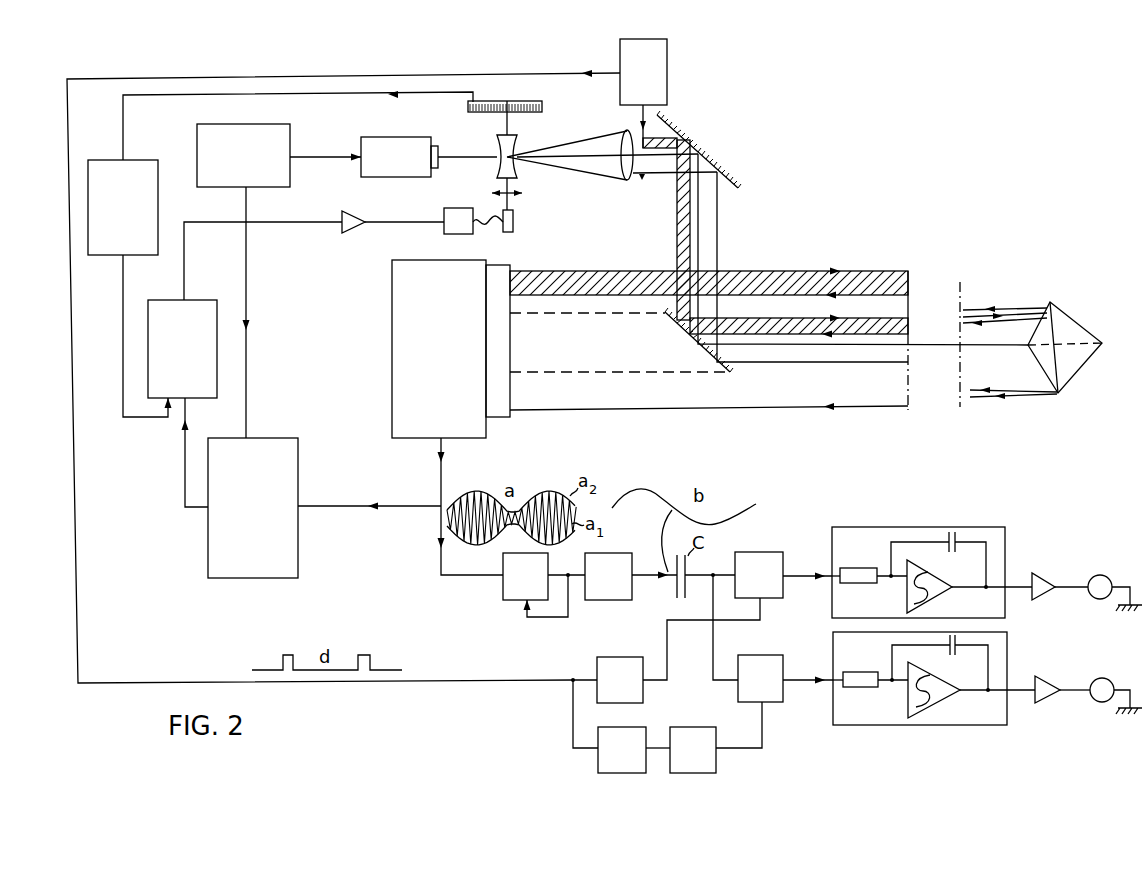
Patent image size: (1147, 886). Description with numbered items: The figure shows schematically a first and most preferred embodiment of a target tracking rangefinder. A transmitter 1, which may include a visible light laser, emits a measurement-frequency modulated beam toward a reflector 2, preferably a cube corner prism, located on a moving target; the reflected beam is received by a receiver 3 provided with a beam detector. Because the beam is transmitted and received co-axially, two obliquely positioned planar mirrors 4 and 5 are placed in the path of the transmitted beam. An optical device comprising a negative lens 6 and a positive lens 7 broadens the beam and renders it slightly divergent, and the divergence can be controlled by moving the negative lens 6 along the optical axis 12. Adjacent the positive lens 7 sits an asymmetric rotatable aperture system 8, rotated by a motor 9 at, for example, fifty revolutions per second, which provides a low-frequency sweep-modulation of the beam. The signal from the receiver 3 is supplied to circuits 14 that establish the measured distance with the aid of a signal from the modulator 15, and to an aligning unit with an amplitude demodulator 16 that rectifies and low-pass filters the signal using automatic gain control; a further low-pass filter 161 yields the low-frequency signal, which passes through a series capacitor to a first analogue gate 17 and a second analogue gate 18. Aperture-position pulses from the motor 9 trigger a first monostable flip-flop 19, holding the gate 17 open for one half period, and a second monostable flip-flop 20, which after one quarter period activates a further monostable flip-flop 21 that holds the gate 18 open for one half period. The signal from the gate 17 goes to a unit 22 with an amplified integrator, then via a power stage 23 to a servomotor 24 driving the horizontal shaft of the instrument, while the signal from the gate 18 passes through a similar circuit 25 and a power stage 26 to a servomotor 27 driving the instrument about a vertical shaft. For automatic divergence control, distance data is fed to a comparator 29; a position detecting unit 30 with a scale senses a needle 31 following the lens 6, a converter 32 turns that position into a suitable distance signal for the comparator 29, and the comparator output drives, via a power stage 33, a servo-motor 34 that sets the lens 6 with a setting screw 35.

The transmitter 1 is at (362, 138).
The reflector 2 is at (1060, 393).
The receiver 3 is at (392, 300).
The planar mirror 4 is at (712, 165).
The planar mirror 5 is at (700, 352).
The negative lens 6 is at (517, 172).
The positive lens 7 is at (621, 133).
The aperture system 8 is at (640, 125).
The motor 9 is at (667, 50).
The optical axis 12 is at (669, 173).
The distance establishing circuits 14 is at (306, 466).
The modulator 15 is at (290, 133).
The amplitude demodulator 16 is at (503, 594).
The low-pass filter 161 is at (604, 600).
The first analogue gate 17 is at (767, 539).
The second analogue gate 18 is at (783, 698).
The first monostable flip-flop 19 is at (597, 660).
The second monostable flip-flop 20 is at (640, 727).
The further monostable flip-flop 21 is at (692, 727).
The processing unit 22 is at (978, 527).
The power stage 23 is at (1036, 572).
The servomotor 24 is at (1106, 562).
The processing circuit 25 is at (1007, 720).
The power stage 26 is at (1040, 676).
The servomotor 27 is at (1107, 666).
The comparator 29 is at (196, 300).
The position detecting unit 30 is at (530, 101).
The needle 31 is at (509, 125).
The converter 32 is at (134, 140).
The power stage 33 is at (352, 212).
The servo-motor 34 is at (444, 212).
The setting screw 35 is at (513, 222).